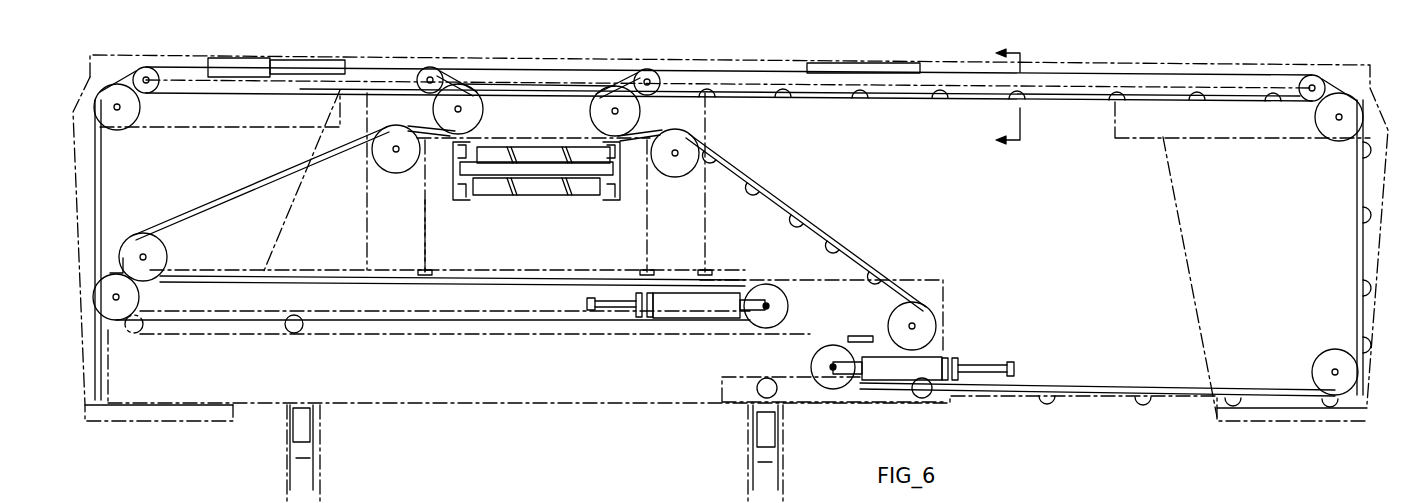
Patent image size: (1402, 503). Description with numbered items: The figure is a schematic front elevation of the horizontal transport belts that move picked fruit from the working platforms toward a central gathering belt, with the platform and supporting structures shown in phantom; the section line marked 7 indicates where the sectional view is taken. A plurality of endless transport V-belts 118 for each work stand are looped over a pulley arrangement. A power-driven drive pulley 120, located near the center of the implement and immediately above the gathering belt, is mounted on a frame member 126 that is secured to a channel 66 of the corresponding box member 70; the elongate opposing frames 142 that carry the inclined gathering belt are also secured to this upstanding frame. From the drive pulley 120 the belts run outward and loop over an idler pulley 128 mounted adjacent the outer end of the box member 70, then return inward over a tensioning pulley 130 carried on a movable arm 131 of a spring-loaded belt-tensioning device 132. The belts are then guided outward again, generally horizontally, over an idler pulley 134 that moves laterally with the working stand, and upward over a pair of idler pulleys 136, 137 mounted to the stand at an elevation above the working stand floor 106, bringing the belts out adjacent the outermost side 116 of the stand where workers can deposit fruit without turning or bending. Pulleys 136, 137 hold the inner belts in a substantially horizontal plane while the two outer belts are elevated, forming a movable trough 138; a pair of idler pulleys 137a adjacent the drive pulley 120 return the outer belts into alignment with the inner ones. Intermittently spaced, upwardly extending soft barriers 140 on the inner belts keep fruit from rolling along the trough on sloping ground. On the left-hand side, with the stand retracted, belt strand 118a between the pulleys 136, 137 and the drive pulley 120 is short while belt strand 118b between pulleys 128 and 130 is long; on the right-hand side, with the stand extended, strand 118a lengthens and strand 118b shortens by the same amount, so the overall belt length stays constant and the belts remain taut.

The section line 7- 7 is at (996, 97).
The channel 66 is at (515, 395).
The box member 70 is at (982, 427).
The working stand floor 106 is at (161, 405).
The outermost side 116 is at (77, 206).
The endless transport V-belt 118 is at (220, 203).
The belt strand 118a is at (290, 78).
The belt strand 118b is at (322, 284).
The drive pulley 120 is at (590, 112).
The frame member 126 is at (427, 249).
The idler pulley 128 is at (168, 260).
The tensioning pulley 130 is at (780, 320).
The movable arm 131 is at (764, 302).
The belt-tensioning device 132 is at (650, 290).
The idler pulley 134 is at (140, 301).
The idler pulley 136 is at (134, 115).
The idler pulley 137 is at (158, 89).
The idler pulley 137a is at (441, 84).
The movable trough 138 is at (312, 76).
The barrier 140 is at (1168, 58).
The frame 142 is at (462, 199).